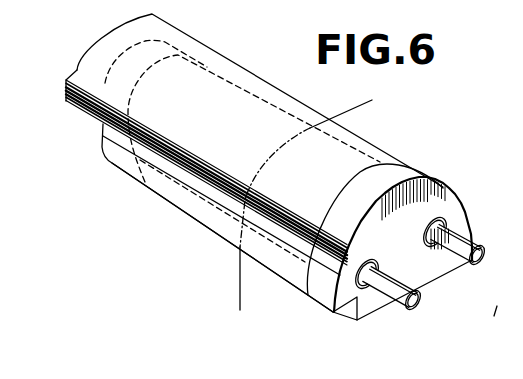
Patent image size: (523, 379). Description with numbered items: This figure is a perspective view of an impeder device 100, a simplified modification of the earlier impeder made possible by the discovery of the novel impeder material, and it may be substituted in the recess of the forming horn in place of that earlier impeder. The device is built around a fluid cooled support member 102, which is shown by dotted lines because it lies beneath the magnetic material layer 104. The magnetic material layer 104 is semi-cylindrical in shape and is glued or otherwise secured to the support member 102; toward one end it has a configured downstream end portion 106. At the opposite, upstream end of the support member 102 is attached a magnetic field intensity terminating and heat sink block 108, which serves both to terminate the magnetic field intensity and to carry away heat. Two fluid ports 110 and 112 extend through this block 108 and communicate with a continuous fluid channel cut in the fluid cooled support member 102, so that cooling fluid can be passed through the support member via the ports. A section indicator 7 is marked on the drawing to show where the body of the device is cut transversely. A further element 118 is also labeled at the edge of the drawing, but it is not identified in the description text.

The impeder device 100 is at (190, 245).
The fluid cooled support member 102 is at (138, 153).
The magnetic material layer 104 is at (78, 88).
The configured downstream end portion 106 is at (105, 55).
The magnetic field intensity terminating and heat sink block 108 is at (428, 172).
The fluid port 110 is at (467, 246).
The fluid port 112 is at (396, 294).
The connector 118 is at (508, 297).
The section line 7- 7 is at (372, 100).